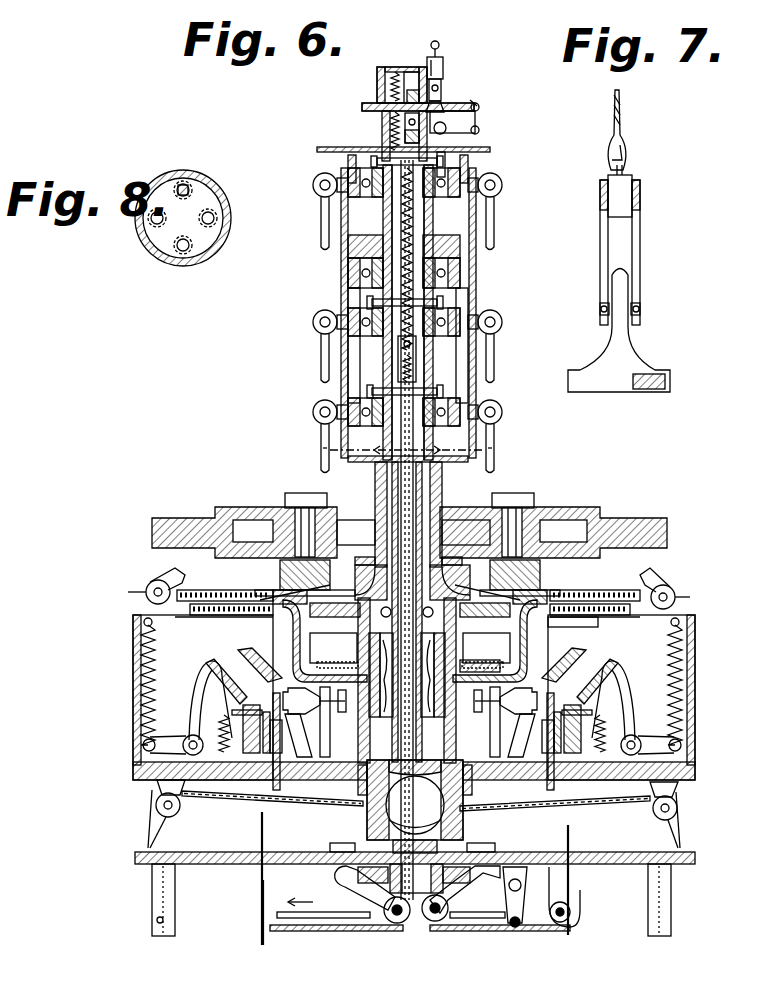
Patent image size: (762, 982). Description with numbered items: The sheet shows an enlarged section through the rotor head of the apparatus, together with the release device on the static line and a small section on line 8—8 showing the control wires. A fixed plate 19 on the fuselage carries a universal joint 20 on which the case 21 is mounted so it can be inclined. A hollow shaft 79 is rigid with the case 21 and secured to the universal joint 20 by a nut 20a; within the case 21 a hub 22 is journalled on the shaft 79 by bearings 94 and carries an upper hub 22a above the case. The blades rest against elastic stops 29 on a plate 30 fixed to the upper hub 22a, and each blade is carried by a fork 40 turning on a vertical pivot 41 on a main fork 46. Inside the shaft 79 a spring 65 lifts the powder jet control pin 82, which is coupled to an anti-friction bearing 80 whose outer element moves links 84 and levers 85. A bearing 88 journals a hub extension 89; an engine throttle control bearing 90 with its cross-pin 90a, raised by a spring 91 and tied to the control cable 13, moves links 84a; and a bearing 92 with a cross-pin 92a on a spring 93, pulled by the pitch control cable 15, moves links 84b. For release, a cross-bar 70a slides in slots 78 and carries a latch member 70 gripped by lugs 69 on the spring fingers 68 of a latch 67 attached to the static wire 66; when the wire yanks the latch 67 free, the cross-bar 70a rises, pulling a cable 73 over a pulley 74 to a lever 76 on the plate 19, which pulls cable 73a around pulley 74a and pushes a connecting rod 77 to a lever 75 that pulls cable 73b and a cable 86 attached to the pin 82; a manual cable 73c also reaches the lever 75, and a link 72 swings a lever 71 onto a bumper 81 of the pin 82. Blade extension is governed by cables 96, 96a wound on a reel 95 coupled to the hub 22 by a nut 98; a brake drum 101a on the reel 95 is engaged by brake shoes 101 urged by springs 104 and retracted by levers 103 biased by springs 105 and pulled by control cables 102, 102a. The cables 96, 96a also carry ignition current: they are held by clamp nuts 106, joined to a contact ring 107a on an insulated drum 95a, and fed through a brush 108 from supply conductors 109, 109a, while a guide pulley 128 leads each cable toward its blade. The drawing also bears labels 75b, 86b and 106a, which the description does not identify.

In FIG. 6, the section line 8— 8 is at (406, 456).
In FIG. 6, the control cable 13 is at (418, 345).
In FIG. 8, the control cable 13 is at (184, 181).
In FIG. 8, the pitch control cable 15 is at (181, 254).
In FIG. 6, the fixed plate 19 is at (292, 863).
In FIG. 6, the universal joint 20 is at (367, 823).
In FIG. 6, the nut 20a is at (362, 790).
In FIG. 6, the case 21 is at (133, 672).
In FIG. 6, the hub 22 is at (447, 690).
In FIG. 6, the upper hub 22a is at (443, 510).
In FIG. 6, the elastic stops 29 is at (280, 574).
In FIG. 6, the plate 30 is at (342, 578).
In FIG. 6, the fork 40 is at (580, 512).
In FIG. 6, the vertical pivot 41 is at (520, 497).
In FIG. 6, the main fork 46 is at (345, 530).
In FIG. 6, the spring 65 is at (395, 85).
In FIG. 6, the static wire 66 is at (439, 44).
In FIG. 7, the static wire 66 is at (621, 120).
In FIG. 6, the latch 67 is at (443, 63).
In FIG. 7, the latch 67 is at (638, 198).
In FIG. 6, the spring fingers 68 is at (441, 84).
In FIG. 7, the spring fingers 68 is at (604, 258).
In FIG. 7, the lugs 69 is at (600, 312).
In FIG. 6, the latch member 70 is at (441, 102).
In FIG. 7, the latch member 70 is at (622, 362).
In FIG. 6, the cross-bar 70a is at (476, 104).
In FIG. 6, the lever 71 is at (442, 134).
In FIG. 6, the link 72 is at (476, 120).
In FIG. 6, the cable 73 is at (440, 815).
In FIG. 8, the cable 73 is at (214, 213).
In FIG. 6, the cable 73a is at (571, 840).
In FIG. 6, the cable 73b is at (260, 830).
In FIG. 6, the cable 73c is at (266, 938).
In FIG. 6, the pulley 74 is at (433, 922).
In FIG. 6, the pulley 74a is at (582, 910).
In FIG. 6, the lever 75 is at (419, 125).
In FIG. 6, the pin 75b is at (175, 925).
In FIG. 6, the second lever 76 is at (512, 898).
In FIG. 6, the connecting rod 77 is at (336, 892).
In FIG. 6, the slots 78 is at (368, 106).
In FIG. 6, the hollow shaft 79 is at (382, 128).
In FIG. 8, the hollow shaft 79 is at (220, 245).
In FIG. 6, the anti-friction bearing 80 is at (470, 161).
In FIG. 6, the bumper 81 is at (348, 160).
In FIG. 6, the powder jet control pin 82 is at (455, 149).
In FIG. 6, the links 84 is at (321, 225).
In FIG. 6, the links 84a is at (321, 355).
In FIG. 6, the links 84b is at (321, 450).
In FIG. 6, the levers 85 is at (434, 197).
In FIG. 6, the cable 86 is at (385, 213).
In FIG. 8, the cable 86 is at (150, 222).
In FIG. 6, the belt 86b is at (355, 931).
In FIG. 6, the bearing 88 is at (462, 273).
In FIG. 6, the hub extension 89 is at (348, 300).
In FIG. 6, the engine throttle control bearing 90 is at (362, 327).
In FIG. 6, the cross-pin 90a is at (445, 300).
In FIG. 6, the spring 91 is at (392, 230).
In FIG. 6, the bearing 92 is at (366, 426).
In FIG. 6, the cross-pin 92a is at (445, 390).
In FIG. 6, the spring 93 is at (398, 352).
In FIG. 6, the bearings 94 is at (400, 662).
In FIG. 6, the winding reel 95 is at (283, 634).
In FIG. 6, the insulated drum 95a is at (500, 672).
In FIG. 6, the cable 96 is at (222, 592).
In FIG. 6, the cable 96a is at (210, 618).
In FIG. 6, the nut 98 is at (395, 597).
In FIG. 6, the brake shoes 101 is at (412, 700).
In FIG. 6, the brake drum 101a is at (410, 671).
In FIG. 6, the control cable 102 is at (160, 840).
In FIG. 6, the control cable 102a is at (660, 826).
In FIG. 6, the levers 103 is at (412, 719).
In FIG. 6, the springs 104 is at (186, 735).
In FIG. 6, the springs 105 is at (156, 665).
In FIG. 6, the clamp nuts 106 is at (407, 641).
In FIG. 6, the guide 106a is at (573, 628).
In FIG. 6, the contact ring 107a is at (520, 705).
In FIG. 6, the brush 108 is at (410, 722).
In FIG. 6, the supply conductor 109 is at (276, 790).
In FIG. 6, the supply conductor 109a is at (556, 792).
In FIG. 6, the guide pulley 128 is at (690, 574).